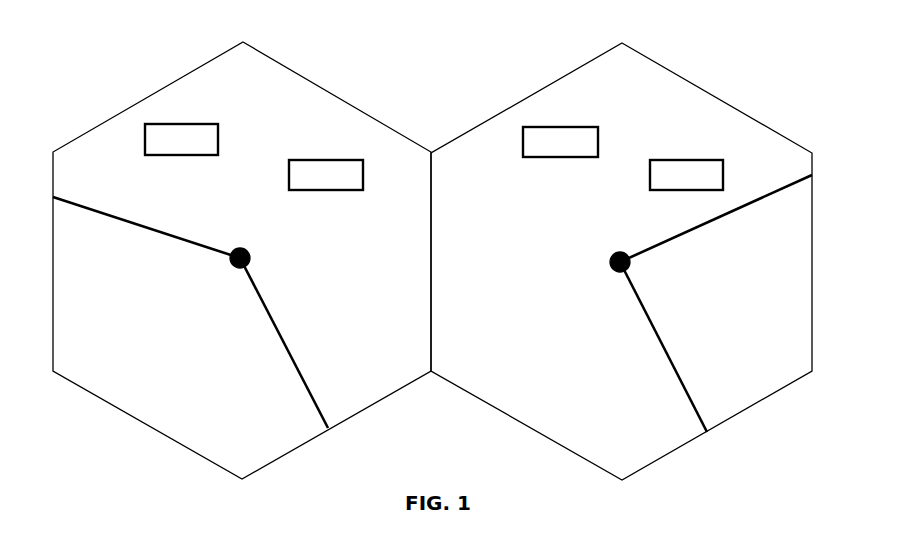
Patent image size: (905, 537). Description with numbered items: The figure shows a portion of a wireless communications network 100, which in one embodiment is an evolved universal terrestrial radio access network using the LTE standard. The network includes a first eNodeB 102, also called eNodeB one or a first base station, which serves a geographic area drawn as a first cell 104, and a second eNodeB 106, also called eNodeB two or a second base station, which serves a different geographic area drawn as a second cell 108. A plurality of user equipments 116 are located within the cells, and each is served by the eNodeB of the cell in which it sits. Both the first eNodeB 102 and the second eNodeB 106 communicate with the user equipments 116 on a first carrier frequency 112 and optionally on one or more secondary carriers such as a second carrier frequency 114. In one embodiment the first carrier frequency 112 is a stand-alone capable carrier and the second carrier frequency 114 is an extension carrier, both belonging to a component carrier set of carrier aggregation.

The wireless communications network 100 is at (484, 58).
The first eNodeB 102 is at (230, 272).
The first cell 104 is at (343, 98).
The second eNodeB 106 is at (630, 267).
The second cell 108 is at (722, 100).
The first carrier frequency 112 is at (145, 230).
The second carrier frequency 114 is at (277, 338).
The user equipments 116 is at (182, 124).